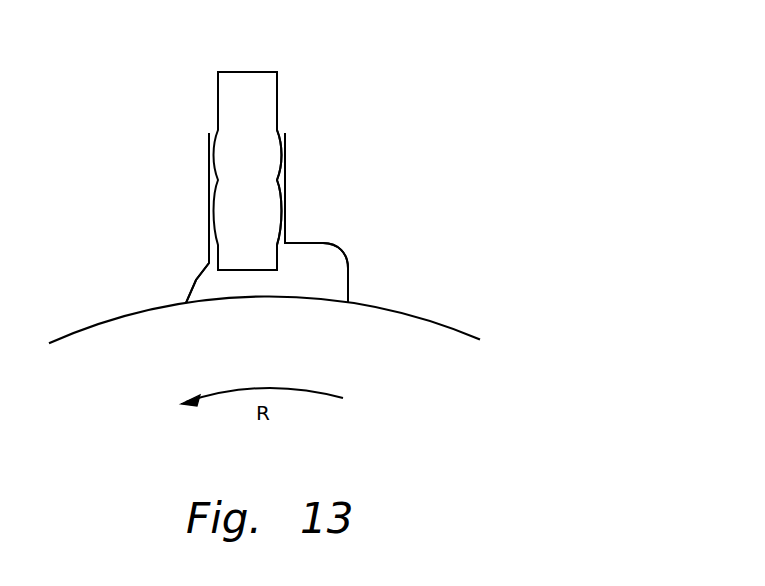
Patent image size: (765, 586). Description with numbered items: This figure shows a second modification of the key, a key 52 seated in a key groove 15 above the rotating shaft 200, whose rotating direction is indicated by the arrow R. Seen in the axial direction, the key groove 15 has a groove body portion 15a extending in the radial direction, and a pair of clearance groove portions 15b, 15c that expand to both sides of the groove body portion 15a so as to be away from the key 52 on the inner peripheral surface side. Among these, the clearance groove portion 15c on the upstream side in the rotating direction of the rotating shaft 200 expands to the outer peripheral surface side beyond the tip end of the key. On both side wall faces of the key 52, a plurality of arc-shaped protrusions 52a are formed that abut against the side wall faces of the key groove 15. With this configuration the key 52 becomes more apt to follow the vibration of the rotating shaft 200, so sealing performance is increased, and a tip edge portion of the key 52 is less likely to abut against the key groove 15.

The key groove 15 is at (275, 287).
The groove body portion 15a is at (212, 184).
The clearance groove portion 15b is at (193, 272).
The clearance groove portion 15c is at (320, 246).
The key 52 is at (257, 83).
The arc-shaped protrusions 52a is at (287, 161).
The rotating shaft 200 is at (264, 327).